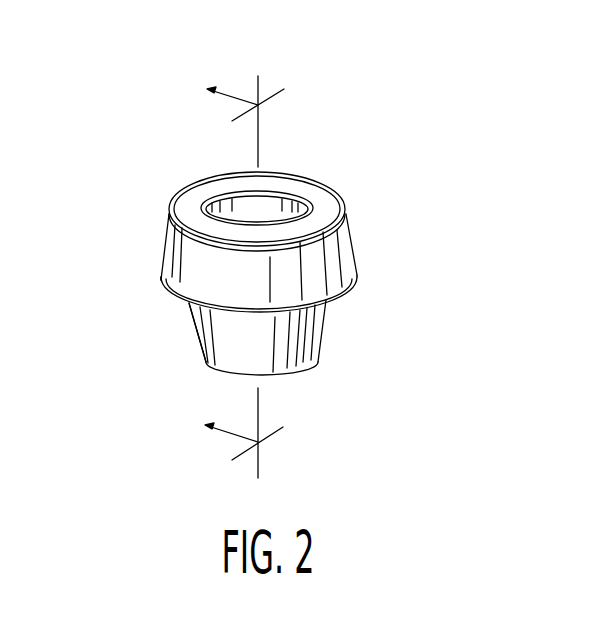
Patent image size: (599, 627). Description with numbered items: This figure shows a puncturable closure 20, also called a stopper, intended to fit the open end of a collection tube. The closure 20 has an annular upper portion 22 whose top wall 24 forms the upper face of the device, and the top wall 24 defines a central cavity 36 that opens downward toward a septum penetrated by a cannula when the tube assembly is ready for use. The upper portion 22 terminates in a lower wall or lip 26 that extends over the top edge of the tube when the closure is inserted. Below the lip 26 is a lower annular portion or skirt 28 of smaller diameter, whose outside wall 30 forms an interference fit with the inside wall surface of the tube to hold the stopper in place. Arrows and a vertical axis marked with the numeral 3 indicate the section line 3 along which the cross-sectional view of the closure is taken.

The closure 20 is at (273, 240).
The annular upper portion 22 is at (340, 257).
The top wall 24 is at (187, 203).
The lower wall or lip 26 is at (340, 295).
The lower annular portion or skirt 28 is at (282, 348).
The outside wall 30 is at (188, 318).
The cavity 36 is at (275, 205).
The section line 3- 3 is at (244, 278).